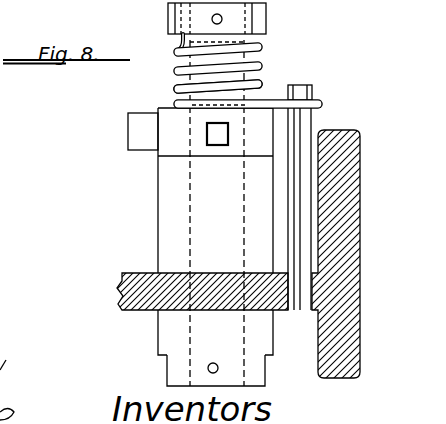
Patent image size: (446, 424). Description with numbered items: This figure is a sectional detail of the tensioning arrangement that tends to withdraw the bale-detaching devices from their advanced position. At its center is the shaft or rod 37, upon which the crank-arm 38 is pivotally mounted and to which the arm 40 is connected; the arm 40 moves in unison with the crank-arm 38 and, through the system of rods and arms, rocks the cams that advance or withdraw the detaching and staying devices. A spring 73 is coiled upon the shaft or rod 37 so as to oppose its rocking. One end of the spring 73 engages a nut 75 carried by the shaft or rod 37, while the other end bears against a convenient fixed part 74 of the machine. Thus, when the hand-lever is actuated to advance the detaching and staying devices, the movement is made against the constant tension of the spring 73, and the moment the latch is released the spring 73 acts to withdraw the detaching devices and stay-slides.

The nut 75 is at (272, 7).
The spring 73 is at (257, 62).
The shaft or rod 37 is at (233, 77).
The fixed part 74 is at (312, 119).
The arm 40 is at (188, 115).
The crank-arm 38 is at (167, 366).